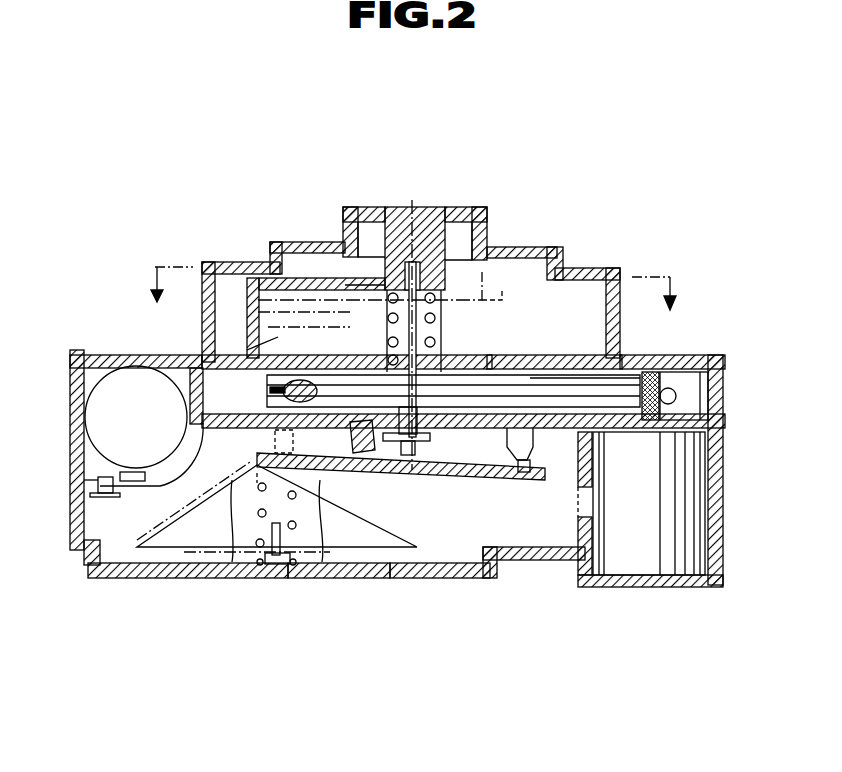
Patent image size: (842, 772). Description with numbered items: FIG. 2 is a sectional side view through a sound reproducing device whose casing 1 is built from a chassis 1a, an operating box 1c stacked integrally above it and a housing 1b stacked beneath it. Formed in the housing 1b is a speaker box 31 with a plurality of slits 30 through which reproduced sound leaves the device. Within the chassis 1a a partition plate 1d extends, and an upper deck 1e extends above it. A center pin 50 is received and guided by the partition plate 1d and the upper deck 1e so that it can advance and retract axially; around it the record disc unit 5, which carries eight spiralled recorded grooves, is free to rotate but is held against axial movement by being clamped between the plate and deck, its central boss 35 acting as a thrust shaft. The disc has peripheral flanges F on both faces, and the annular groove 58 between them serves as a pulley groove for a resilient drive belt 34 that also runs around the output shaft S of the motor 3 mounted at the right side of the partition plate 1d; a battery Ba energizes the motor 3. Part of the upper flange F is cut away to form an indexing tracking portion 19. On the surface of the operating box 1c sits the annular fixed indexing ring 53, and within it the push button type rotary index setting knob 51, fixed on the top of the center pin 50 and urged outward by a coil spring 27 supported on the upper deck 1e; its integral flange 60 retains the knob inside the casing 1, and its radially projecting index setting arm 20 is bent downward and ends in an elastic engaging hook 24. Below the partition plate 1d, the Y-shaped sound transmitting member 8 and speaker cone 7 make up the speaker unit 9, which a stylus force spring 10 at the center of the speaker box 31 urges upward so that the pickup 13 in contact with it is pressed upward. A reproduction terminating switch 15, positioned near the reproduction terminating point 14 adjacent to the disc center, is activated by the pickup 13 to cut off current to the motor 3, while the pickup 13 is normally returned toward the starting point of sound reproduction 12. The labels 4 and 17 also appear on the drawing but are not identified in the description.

The casing 1 is at (262, 262).
The chassis 1a is at (200, 350).
The housing 1b is at (78, 546).
The operating box 1c is at (250, 268).
The partition plate 1d is at (548, 440).
The upper deck 1e is at (464, 580).
The motor 3 is at (610, 566).
The section line 4 is at (418, 305).
The record disc unit 5 is at (560, 400).
The speaker cone 7 is at (178, 576).
The sound transmitting member 8 is at (530, 410).
The speaker unit 9 is at (448, 410).
The stylus force spring 10 is at (298, 577).
The starting point of sound reproduction 12 is at (207, 545).
The pickup 13 is at (340, 577).
The reproduction terminating point 14 is at (395, 445).
The reproduction terminating switch 15 is at (352, 455).
The wall 17 is at (202, 338).
The indexing tracking portion 19 is at (279, 375).
The index setting arm 20 is at (247, 318).
The engaging hook 24 is at (248, 325).
The coil spring 27 is at (437, 343).
The slits 30 is at (425, 578).
The speaker box 31 is at (95, 579).
The drive belt 34 is at (683, 428).
The boss 35 is at (352, 224).
The center pin 50 is at (413, 245).
The rotary index setting knob 51 is at (455, 214).
The indexing ring 53 is at (548, 258).
The annular groove 58 is at (272, 390).
The flange 60 is at (340, 283).
The battery Ba is at (95, 428).
The output shaft S is at (660, 392).
The flanges F is at (568, 450).